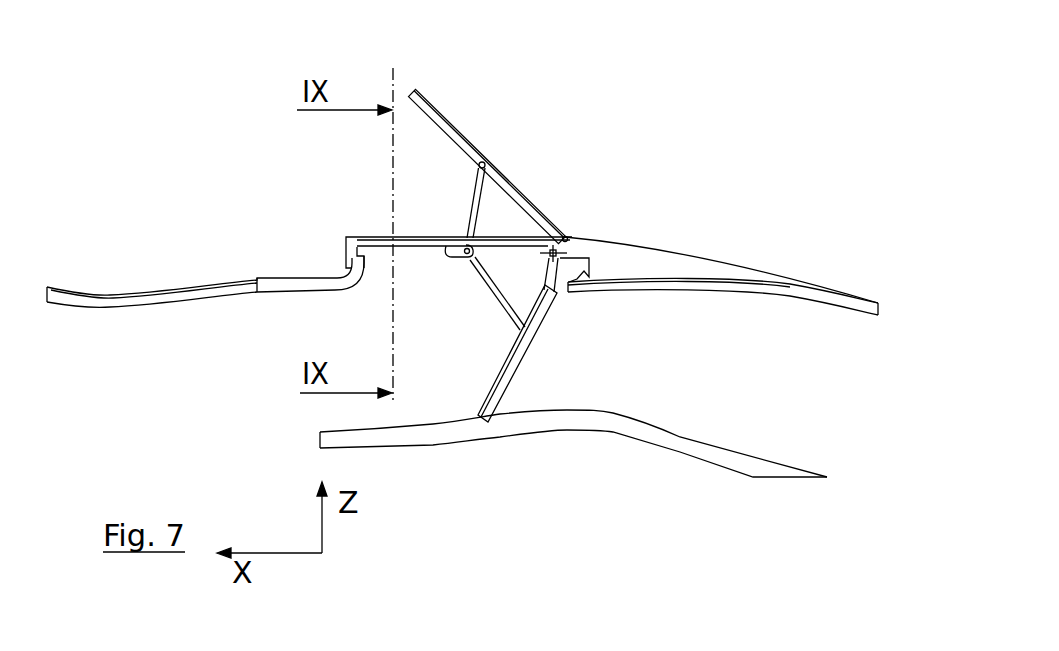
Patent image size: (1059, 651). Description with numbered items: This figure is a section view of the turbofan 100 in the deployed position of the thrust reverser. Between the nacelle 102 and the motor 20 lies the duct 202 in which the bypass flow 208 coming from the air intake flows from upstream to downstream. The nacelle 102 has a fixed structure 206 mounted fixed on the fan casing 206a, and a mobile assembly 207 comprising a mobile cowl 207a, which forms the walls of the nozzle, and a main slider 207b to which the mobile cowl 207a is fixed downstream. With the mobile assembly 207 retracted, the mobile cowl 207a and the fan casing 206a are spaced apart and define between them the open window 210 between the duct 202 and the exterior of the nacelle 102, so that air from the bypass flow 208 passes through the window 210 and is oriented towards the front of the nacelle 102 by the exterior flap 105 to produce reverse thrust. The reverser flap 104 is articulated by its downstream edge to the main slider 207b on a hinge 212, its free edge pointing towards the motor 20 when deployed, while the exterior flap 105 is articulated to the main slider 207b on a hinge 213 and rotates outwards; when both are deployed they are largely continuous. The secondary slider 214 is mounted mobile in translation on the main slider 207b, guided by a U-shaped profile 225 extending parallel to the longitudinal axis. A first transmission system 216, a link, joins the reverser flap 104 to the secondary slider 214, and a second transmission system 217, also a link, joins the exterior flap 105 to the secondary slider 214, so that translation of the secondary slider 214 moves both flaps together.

The motor 20 is at (788, 472).
The turbofan 100 is at (792, 143).
The nacelle 102 is at (663, 510).
The reverser flap 104 is at (498, 388).
The exterior flap 105 is at (435, 120).
The duct 202 is at (235, 402).
The fixed structure 206 is at (115, 426).
The fan casing 206a is at (113, 303).
The mobile assembly 207 is at (740, 90).
The mobile cowl 207a is at (780, 285).
The main slider 207b is at (345, 238).
The bypass flow 208 is at (189, 344).
The window 210 is at (353, 70).
The hinge 212 is at (556, 260).
The hinge 213 is at (565, 237).
The secondary slider 214 is at (457, 256).
The first transmission system 216 is at (490, 288).
The second transmission system 217 is at (478, 198).
The U-shaped profile 225 is at (375, 240).